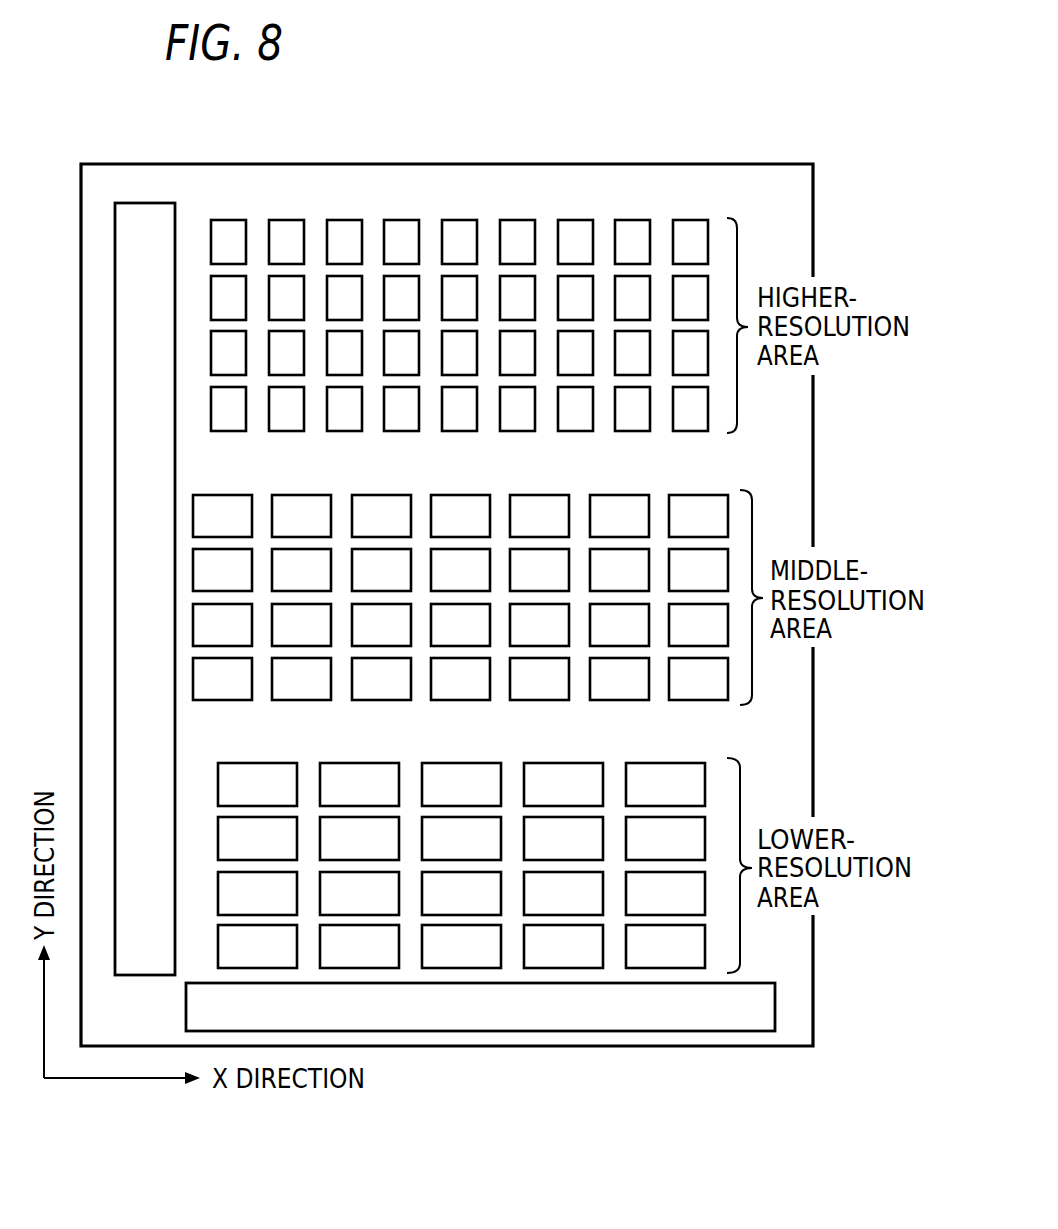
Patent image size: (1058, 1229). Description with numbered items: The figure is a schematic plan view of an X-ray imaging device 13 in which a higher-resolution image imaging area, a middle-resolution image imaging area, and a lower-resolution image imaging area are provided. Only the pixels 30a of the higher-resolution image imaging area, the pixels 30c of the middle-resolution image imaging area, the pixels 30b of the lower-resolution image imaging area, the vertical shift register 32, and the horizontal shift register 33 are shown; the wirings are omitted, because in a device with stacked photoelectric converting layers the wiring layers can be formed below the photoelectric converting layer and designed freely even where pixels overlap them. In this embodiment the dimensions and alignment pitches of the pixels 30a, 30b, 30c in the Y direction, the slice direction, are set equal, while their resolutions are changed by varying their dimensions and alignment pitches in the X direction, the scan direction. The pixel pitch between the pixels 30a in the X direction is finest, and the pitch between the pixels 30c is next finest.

The X-ray imaging device 13 is at (611, 148).
The pixels in the higher-resolution image imaging area 30a is at (688, 230).
The pixels in the lower-resolution image imaging area 30b is at (672, 776).
The pixels in the middle-resolution image imaging area 30c is at (698, 507).
The vertical shift register 32 is at (122, 331).
The horizontal shift register 33 is at (693, 1020).